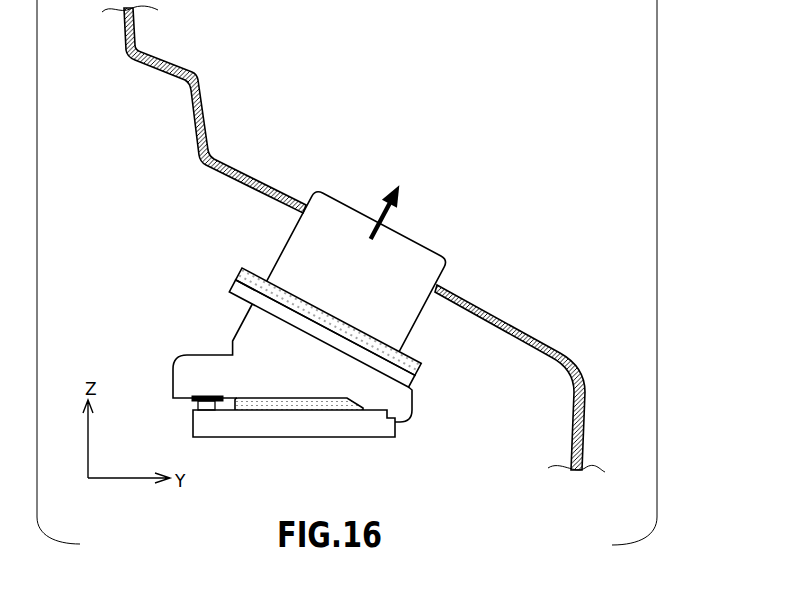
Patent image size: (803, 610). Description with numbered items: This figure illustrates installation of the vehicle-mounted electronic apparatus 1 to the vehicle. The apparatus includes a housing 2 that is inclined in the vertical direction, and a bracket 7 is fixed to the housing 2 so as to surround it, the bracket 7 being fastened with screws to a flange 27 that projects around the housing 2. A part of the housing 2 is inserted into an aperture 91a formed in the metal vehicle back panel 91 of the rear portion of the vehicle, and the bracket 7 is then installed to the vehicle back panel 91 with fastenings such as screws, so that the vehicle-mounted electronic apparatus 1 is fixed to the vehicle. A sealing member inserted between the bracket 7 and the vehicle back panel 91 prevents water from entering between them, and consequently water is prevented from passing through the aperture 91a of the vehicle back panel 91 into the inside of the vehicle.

The vehicle-mounted electronic apparatus 1 is at (157, 252).
The housing 2 is at (285, 271).
The bracket 7 is at (240, 274).
The flange 27 is at (231, 292).
The vehicle back panel 91 is at (200, 127).
The aperture 91a is at (444, 283).